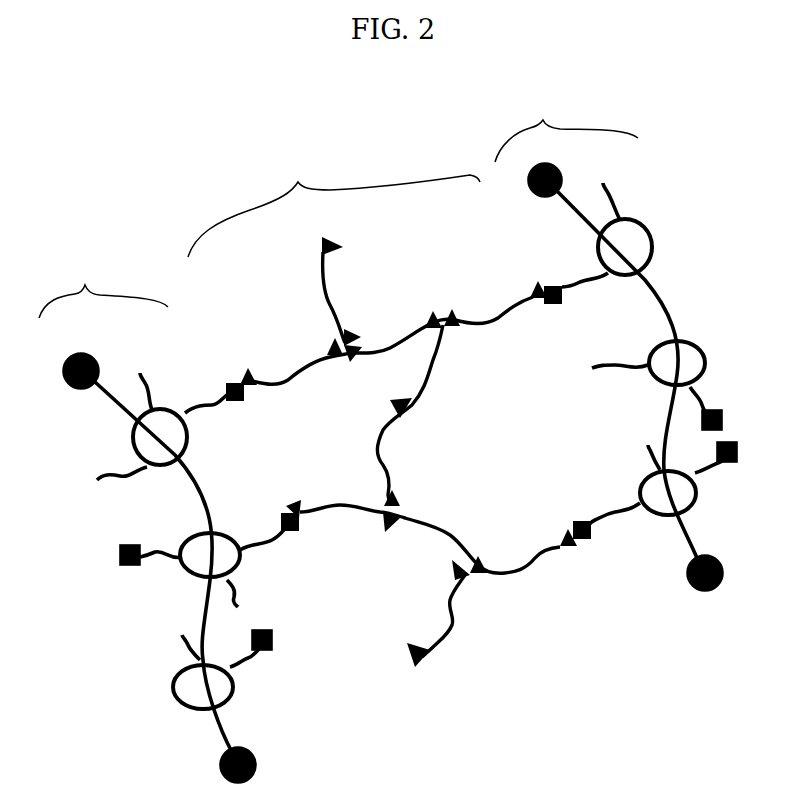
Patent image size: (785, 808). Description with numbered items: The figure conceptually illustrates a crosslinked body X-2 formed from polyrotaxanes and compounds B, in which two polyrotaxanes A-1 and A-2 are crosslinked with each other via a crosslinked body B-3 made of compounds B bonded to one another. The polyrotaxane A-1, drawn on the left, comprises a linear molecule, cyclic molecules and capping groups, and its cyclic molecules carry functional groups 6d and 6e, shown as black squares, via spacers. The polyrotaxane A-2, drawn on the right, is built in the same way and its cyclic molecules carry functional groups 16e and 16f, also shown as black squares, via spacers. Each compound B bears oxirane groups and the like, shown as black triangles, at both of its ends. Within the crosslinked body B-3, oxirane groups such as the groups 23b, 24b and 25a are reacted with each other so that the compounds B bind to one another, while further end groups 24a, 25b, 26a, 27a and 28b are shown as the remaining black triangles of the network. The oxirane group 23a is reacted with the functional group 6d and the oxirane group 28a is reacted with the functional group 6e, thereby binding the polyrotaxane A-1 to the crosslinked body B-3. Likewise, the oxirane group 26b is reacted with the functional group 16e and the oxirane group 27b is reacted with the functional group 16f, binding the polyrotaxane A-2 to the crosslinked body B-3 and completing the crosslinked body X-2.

The functional group 6d is at (233, 401).
The functional group 6e is at (297, 537).
The functional group 16e is at (563, 307).
The functional group 16f is at (595, 542).
The oxirane group and the like 23a is at (248, 370).
The oxirane group and the like 23b is at (332, 343).
The oxirane group and the like 24a is at (338, 245).
The oxirane group and the like 24b is at (352, 332).
The oxirane group and the like 25a is at (350, 356).
The oxirane group and the like 25b is at (436, 313).
The oxirane group and the like 26a is at (457, 313).
The oxirane group and the like 26b is at (538, 285).
The oxirane group and the like 27a is at (483, 577).
The oxirane group and the like 27b is at (565, 532).
The oxirane group and the like 28a is at (293, 503).
The oxirane group and the like 28b is at (385, 530).
The polyrotaxane A-1 is at (103, 287).
The polyrotaxane A-2 is at (566, 128).
The crosslinked body of compounds B B-3 is at (334, 207).
The crosslinked body X-2 is at (674, 206).